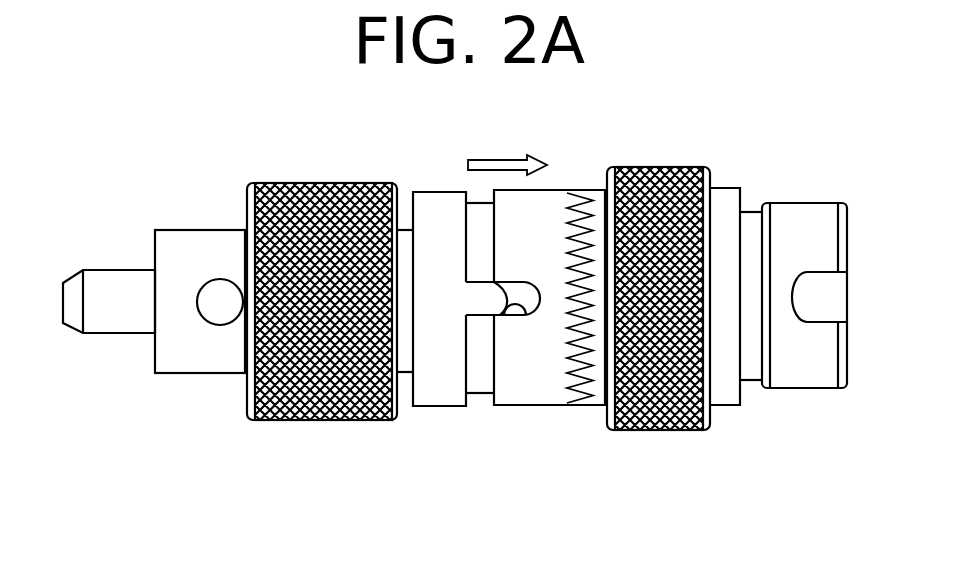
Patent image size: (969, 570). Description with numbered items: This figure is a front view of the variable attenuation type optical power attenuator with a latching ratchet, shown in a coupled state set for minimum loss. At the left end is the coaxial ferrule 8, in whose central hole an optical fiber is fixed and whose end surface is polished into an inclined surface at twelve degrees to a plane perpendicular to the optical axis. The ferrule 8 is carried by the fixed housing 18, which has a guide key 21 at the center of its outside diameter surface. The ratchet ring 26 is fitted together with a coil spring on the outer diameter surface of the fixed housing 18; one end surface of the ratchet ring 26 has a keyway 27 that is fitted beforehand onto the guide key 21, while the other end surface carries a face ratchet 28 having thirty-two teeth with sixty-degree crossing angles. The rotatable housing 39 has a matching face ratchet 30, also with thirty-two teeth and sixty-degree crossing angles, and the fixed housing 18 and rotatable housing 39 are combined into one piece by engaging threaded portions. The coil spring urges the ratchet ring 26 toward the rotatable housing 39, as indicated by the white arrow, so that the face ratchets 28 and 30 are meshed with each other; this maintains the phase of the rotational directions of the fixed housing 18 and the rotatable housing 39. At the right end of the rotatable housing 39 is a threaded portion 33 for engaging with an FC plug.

The ferrule 8 is at (105, 278).
The fixed housing 18 is at (190, 363).
The guide key 21 is at (483, 303).
The ratchet ring 26 is at (553, 395).
The keyway 27 is at (520, 303).
The face ratchet 28 is at (572, 222).
The face ratchet 30 is at (593, 222).
The threaded portion 33 is at (817, 170).
The rotatable housing 39 is at (665, 430).